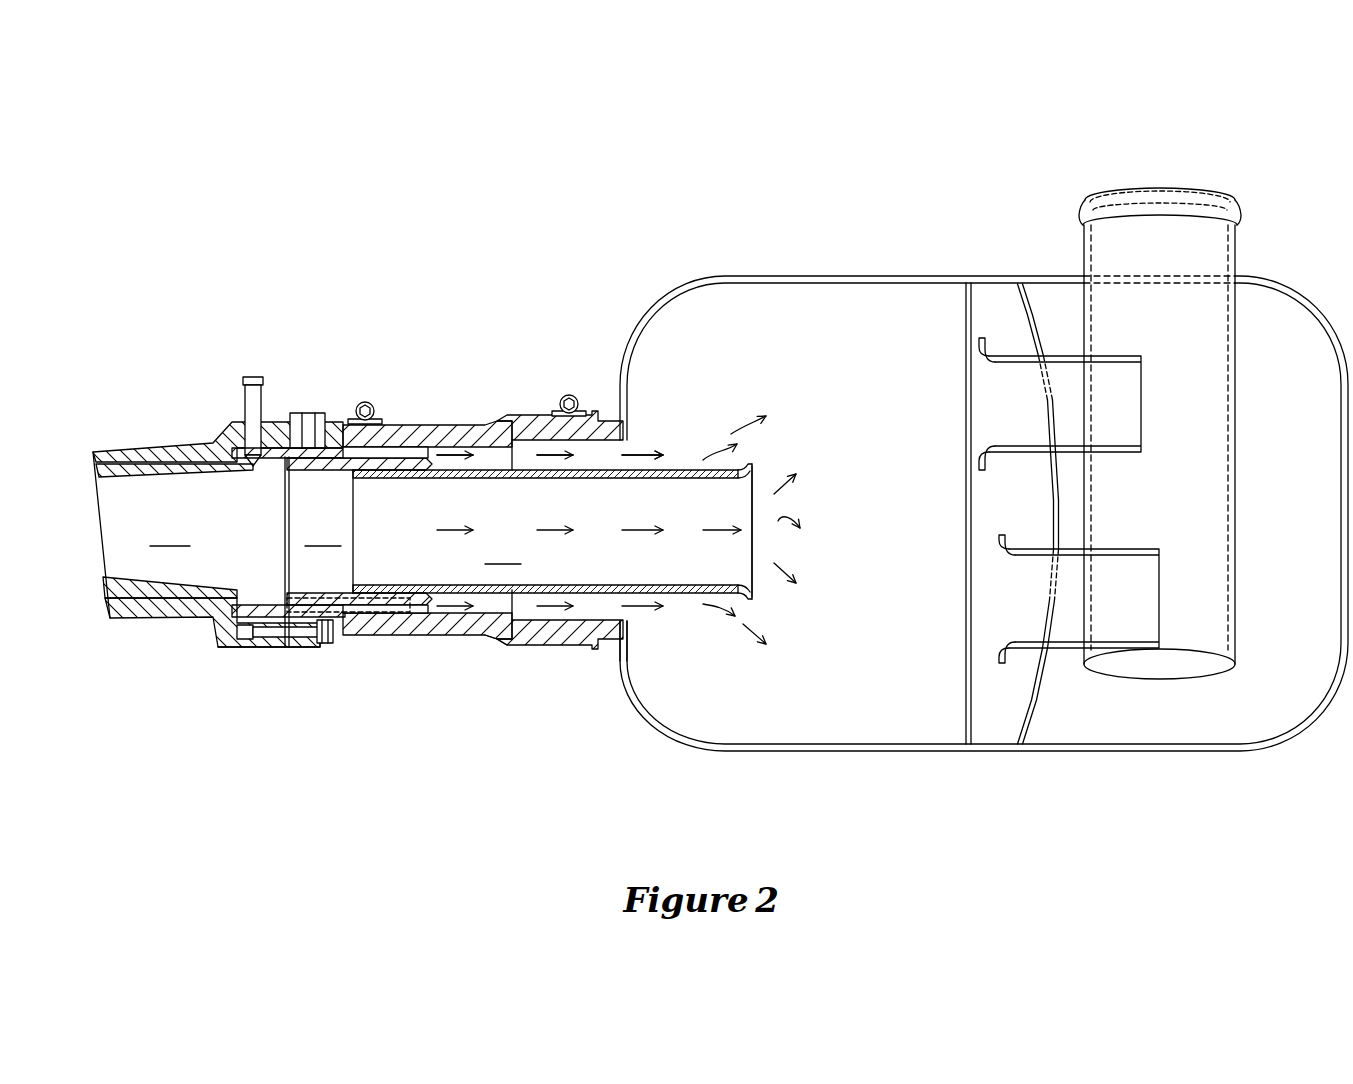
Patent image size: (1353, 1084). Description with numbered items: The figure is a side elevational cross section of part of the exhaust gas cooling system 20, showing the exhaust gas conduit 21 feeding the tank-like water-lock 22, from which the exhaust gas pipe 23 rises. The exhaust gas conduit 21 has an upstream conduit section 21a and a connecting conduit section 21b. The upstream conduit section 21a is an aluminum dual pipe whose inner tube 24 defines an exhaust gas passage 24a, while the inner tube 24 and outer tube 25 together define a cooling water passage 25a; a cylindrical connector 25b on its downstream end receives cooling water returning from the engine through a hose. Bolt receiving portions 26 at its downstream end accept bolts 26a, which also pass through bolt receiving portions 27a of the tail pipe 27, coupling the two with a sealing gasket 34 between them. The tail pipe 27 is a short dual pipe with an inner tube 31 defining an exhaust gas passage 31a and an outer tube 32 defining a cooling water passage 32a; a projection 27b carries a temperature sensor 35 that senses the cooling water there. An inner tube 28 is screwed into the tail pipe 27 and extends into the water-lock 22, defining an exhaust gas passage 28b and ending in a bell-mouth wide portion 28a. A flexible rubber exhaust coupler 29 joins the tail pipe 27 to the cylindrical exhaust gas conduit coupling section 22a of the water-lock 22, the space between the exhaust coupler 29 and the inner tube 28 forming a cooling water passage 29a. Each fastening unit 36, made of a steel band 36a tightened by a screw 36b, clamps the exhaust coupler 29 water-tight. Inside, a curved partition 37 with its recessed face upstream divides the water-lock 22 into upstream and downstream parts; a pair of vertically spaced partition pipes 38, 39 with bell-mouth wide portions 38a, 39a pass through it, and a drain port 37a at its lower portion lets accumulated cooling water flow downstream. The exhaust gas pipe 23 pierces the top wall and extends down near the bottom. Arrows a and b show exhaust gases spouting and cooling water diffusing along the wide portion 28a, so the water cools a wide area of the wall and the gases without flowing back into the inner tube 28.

The exhaust gas cooling system 20 is at (1255, 128).
The exhaust gas conduit 21 is at (307, 335).
The upstream conduit section 21a is at (185, 401).
The connecting conduit section 21b is at (387, 343).
The water-lock 22 is at (818, 277).
The exhaust gas conduit coupling section 22a is at (606, 628).
The exhaust gas pipe 23 is at (1238, 253).
The inner tube 24 is at (131, 470).
The exhaust gas passage 24a is at (169, 533).
The outer tube 25 is at (165, 455).
The cooling water passage 25a is at (108, 598).
The cylindrical connector 25b is at (250, 376).
The bolt receiving portions 26 is at (232, 648).
The bolts 26a is at (277, 640).
The tail pipe 27 is at (420, 378).
The bolt receiving portions 27a is at (313, 641).
The projection 27b is at (340, 446).
The inner tube 28 is at (463, 470).
The wide portion 28a is at (750, 463).
The exhaust gas passage 28b is at (503, 551).
The exhaust coupler 29 is at (518, 425).
The cooling water passage 29a is at (482, 626).
The inner tube 31 is at (378, 418).
The exhaust gas passage 31a is at (322, 533).
The outer tube 32 is at (405, 458).
The cooling water passage 32a is at (338, 604).
The sealing gasket 34 is at (285, 557).
The temperature sensor 35 is at (303, 418).
The fastening unit 36 is at (530, 354).
The steel band 36a is at (583, 409).
The screw 36b is at (560, 404).
The partition 37 is at (1052, 512).
The drain port 37a is at (1036, 706).
The partition pipe 38 is at (1112, 356).
The wide portion 38a is at (982, 346).
The partition pipe 39 is at (1117, 549).
The wide portion 39a is at (1003, 664).